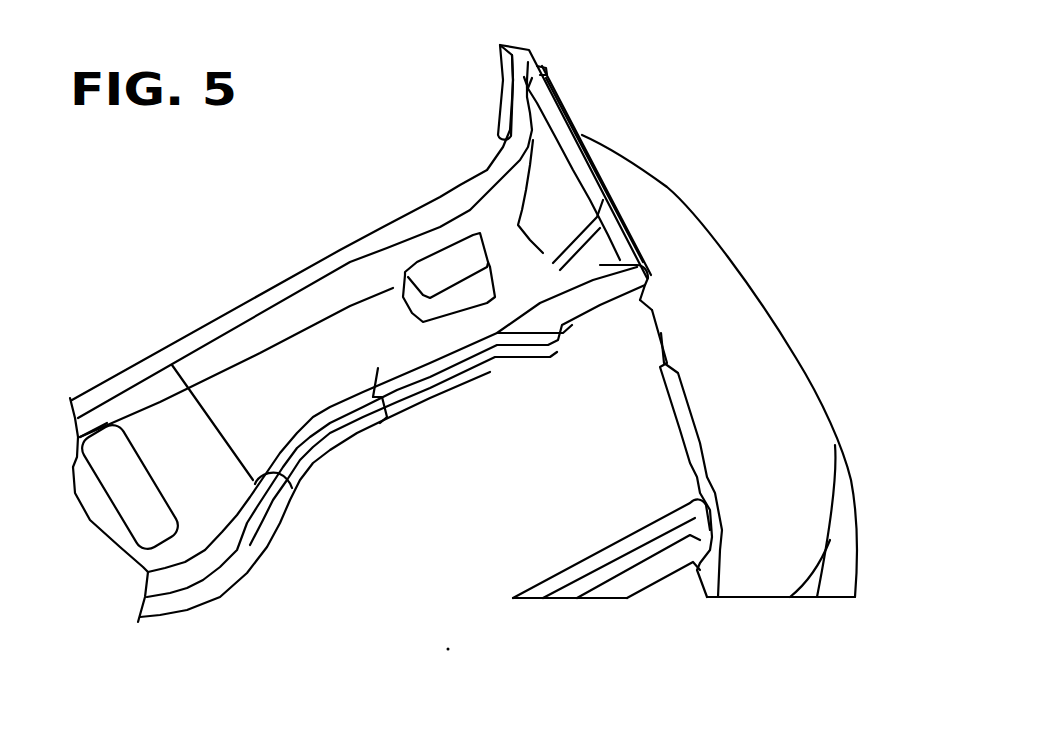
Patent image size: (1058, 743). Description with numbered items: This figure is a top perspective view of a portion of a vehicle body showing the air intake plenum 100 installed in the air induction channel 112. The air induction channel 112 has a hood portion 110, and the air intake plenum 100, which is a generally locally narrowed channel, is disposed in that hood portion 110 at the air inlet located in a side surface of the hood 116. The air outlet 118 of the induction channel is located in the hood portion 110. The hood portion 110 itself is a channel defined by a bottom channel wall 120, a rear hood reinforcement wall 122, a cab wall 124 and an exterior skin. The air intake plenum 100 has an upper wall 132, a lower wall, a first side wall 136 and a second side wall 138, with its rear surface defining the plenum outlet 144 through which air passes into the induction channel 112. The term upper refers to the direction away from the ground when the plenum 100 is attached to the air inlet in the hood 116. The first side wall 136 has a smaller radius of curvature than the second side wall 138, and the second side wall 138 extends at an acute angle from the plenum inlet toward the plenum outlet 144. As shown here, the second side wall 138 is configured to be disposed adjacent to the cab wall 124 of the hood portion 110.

The air intake plenum 100 is at (557, 182).
The hood portion 110 is at (294, 357).
The air induction channel 112 is at (378, 188).
The hood 116 is at (547, 72).
The air outlet 118 is at (98, 470).
The bottom channel wall 120 is at (182, 440).
The rear hood reinforcement wall 122 is at (378, 368).
The cab wall 124 is at (207, 366).
The upper wall 132 is at (558, 212).
The first side wall 136 is at (600, 265).
The second side wall 138 is at (537, 135).
The plenum outlet 144 is at (543, 253).